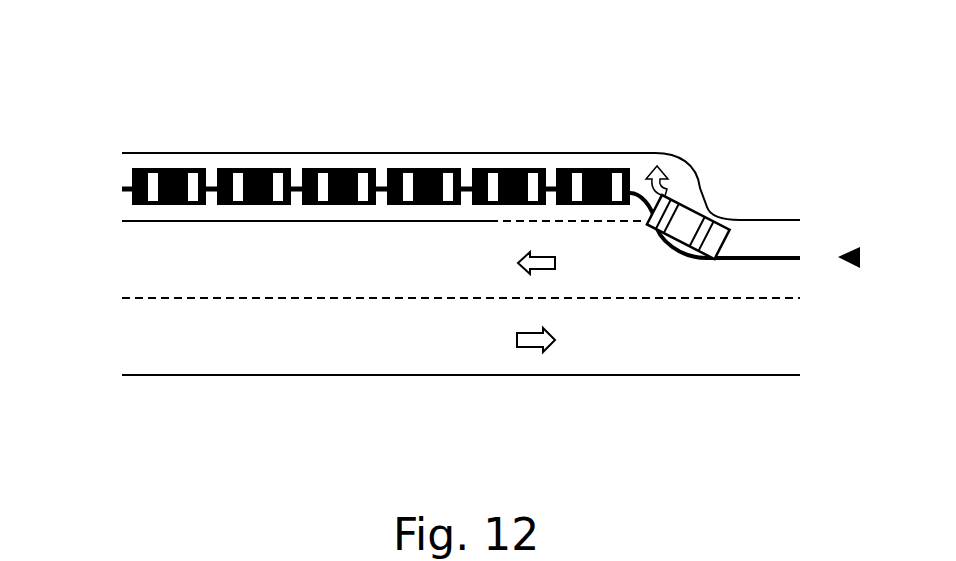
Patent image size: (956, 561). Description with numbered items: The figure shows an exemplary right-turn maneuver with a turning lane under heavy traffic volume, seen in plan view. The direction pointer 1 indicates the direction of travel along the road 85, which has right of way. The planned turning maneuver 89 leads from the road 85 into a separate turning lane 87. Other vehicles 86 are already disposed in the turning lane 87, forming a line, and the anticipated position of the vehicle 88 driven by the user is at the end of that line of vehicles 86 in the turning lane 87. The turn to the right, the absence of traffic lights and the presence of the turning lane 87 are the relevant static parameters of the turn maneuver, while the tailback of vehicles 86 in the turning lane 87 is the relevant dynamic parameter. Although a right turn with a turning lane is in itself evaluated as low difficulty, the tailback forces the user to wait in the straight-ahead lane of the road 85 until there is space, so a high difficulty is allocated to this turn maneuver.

The direction pointer 1 is at (851, 255).
The road 85 is at (195, 244).
The other vehicles 86 is at (337, 168).
The turning lane 87 is at (643, 160).
The vehicle 88 is at (703, 210).
The planned turning maneuver 89 is at (763, 257).